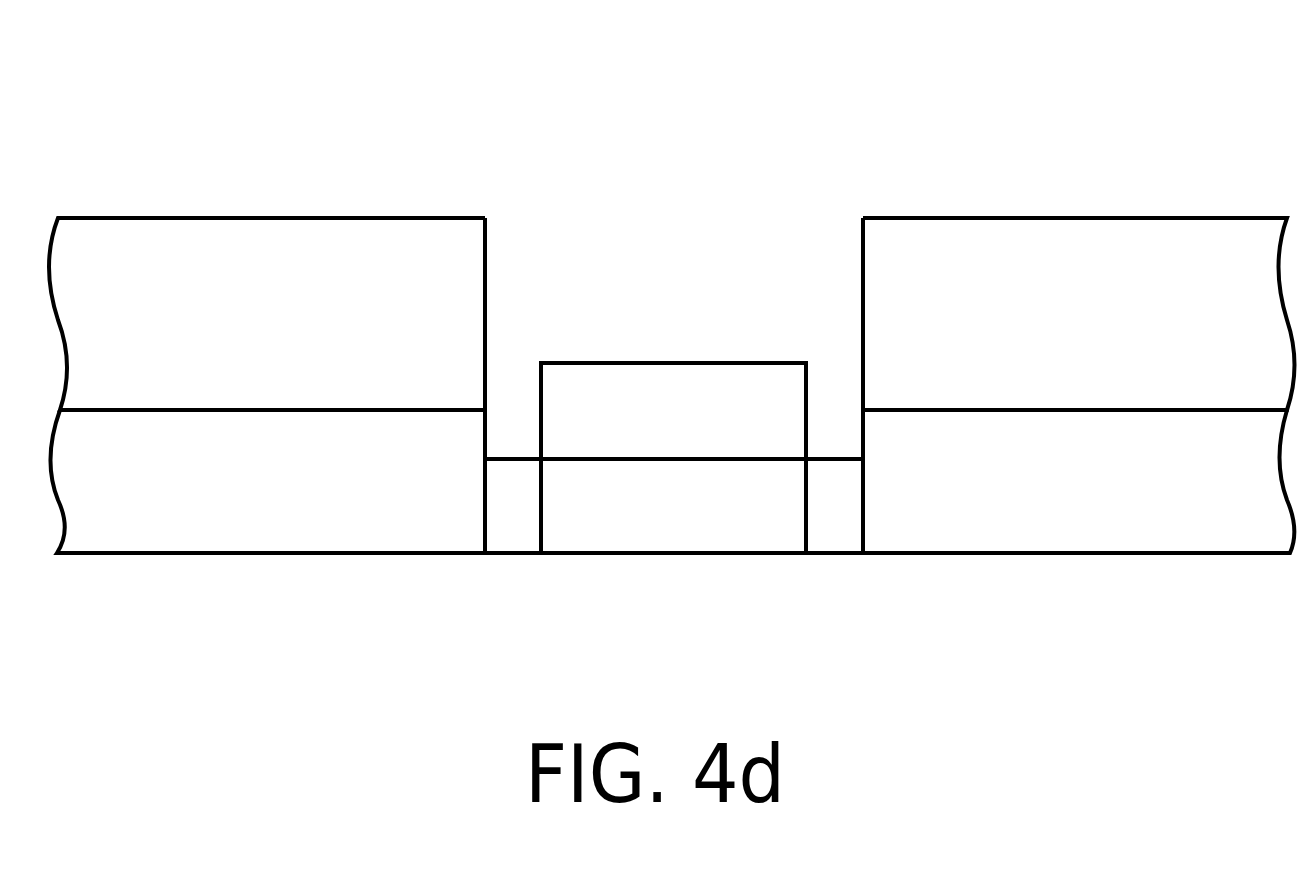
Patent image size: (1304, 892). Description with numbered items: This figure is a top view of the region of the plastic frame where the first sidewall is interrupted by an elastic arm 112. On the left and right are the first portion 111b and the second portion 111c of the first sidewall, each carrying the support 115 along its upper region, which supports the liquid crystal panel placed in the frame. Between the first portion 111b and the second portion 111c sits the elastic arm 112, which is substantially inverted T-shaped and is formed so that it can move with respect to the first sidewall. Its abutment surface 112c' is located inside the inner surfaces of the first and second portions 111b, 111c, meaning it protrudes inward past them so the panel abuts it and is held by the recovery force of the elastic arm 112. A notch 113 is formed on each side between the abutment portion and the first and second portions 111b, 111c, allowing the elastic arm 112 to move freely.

The support 115 is at (272, 260).
The first portion 111b is at (272, 490).
The second portion 111c is at (1076, 490).
The notch 113 is at (512, 430).
The elastic arm 112 is at (674, 500).
The abutment surface 112c' is at (673, 321).